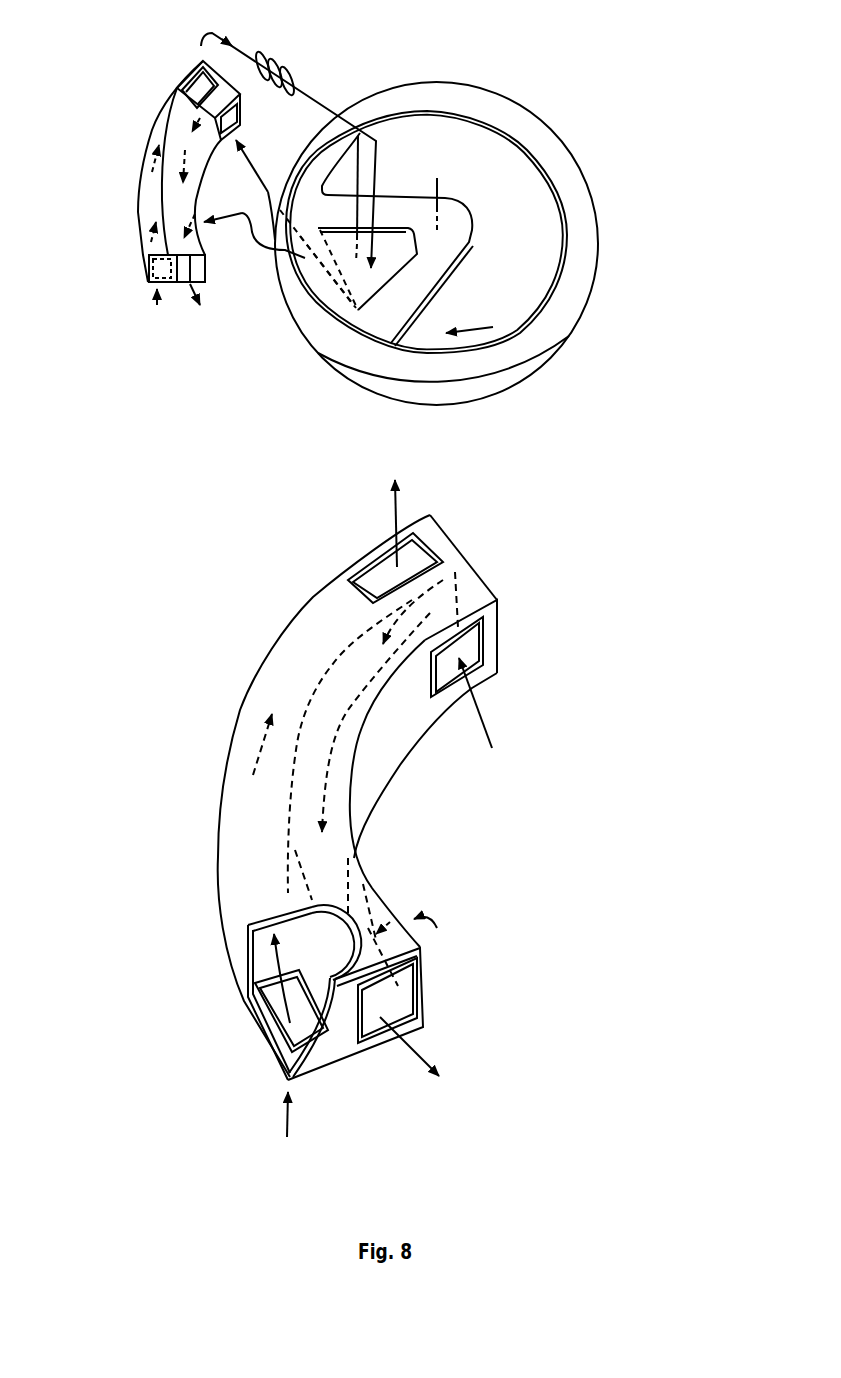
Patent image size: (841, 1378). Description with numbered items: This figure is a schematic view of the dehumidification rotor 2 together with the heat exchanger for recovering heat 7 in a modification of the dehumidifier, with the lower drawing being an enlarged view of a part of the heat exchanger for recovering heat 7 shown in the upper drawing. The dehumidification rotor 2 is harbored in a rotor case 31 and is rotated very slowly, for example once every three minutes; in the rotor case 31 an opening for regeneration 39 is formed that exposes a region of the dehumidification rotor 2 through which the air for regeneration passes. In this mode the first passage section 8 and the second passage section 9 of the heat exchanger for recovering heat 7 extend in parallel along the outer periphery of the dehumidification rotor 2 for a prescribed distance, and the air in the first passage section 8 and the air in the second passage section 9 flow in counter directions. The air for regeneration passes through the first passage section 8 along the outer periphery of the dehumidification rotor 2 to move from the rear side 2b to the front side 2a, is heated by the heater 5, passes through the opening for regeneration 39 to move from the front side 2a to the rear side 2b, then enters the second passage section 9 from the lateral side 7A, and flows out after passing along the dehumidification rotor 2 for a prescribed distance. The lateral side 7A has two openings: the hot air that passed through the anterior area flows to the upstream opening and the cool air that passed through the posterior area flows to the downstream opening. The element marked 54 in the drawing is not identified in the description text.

The dehumidification rotor 2 is at (483, 231).
The front side 2a is at (432, 128).
The rear side 2b is at (483, 268).
The rotor case 31 is at (583, 220).
The opening for regeneration 39 is at (358, 310).
The heater 5 is at (283, 62).
The heat exchanger for recovering heat 7 is at (292, 797).
The lateral side 7A is at (370, 766).
The first passage section 8 is at (152, 200).
The second passage section 9 is at (190, 140).
The partition wall 54 is at (317, 942).